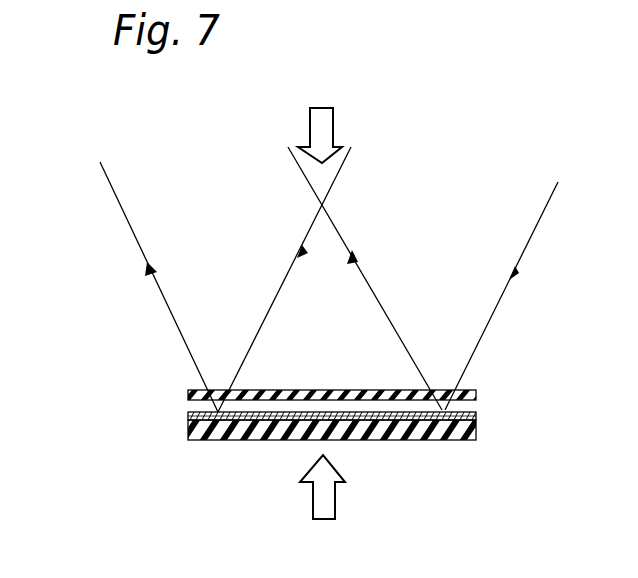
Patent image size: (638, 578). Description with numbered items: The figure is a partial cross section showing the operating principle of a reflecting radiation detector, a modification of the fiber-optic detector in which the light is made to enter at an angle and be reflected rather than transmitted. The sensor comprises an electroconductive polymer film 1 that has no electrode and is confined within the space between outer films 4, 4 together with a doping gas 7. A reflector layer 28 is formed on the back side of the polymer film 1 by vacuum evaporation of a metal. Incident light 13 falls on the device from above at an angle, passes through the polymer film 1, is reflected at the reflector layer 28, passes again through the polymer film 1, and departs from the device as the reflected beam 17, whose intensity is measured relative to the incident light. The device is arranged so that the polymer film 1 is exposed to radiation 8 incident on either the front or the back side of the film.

The radiation 8 is at (337, 133).
The reflected light beam 17 is at (170, 314).
The incident light 13 is at (492, 314).
The outer film 4 is at (478, 393).
The electroconductive polymer film 1 is at (478, 414).
The reflector layer 28 is at (478, 423).
The doping gas 7 is at (318, 406).